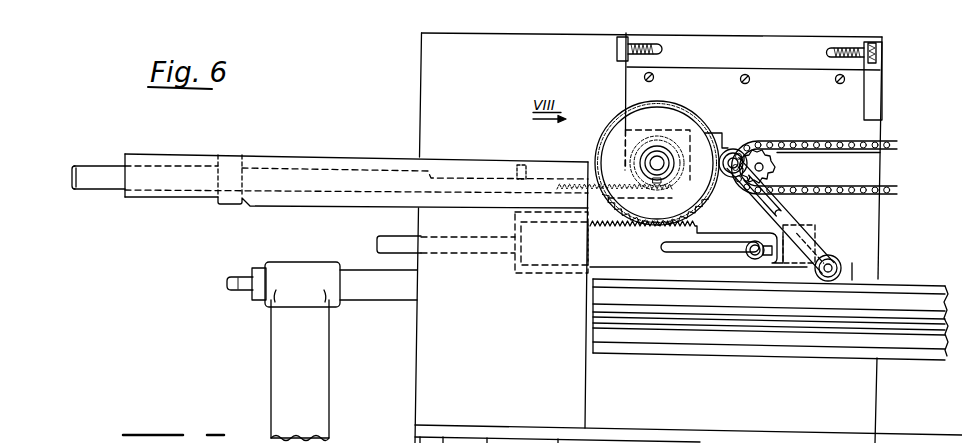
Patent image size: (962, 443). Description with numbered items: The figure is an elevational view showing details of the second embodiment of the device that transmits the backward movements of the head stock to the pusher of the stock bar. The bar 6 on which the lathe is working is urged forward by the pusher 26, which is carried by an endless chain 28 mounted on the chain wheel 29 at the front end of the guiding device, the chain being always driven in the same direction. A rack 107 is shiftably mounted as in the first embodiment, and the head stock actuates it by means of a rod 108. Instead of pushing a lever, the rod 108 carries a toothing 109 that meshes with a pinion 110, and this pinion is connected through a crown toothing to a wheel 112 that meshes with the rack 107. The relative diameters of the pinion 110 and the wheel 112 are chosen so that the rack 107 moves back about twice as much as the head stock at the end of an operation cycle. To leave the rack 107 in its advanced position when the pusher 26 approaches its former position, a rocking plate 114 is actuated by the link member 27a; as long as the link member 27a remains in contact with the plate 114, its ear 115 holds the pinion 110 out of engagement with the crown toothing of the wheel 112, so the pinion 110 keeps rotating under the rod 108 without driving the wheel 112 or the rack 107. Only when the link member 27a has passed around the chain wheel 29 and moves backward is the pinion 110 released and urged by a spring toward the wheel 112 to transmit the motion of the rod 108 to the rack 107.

The bar 6 is at (237, 278).
The pusher 26 is at (847, 263).
The link member 27a is at (729, 152).
The endless chain 28 is at (881, 153).
The chain wheel 29 is at (773, 153).
The rack 107 is at (642, 256).
The rod 108 is at (96, 173).
The toothing 109 is at (577, 183).
The pinion 110 is at (674, 179).
The wheel 112 is at (697, 122).
The rocking plate 114 is at (852, 113).
The ear 115 is at (627, 150).